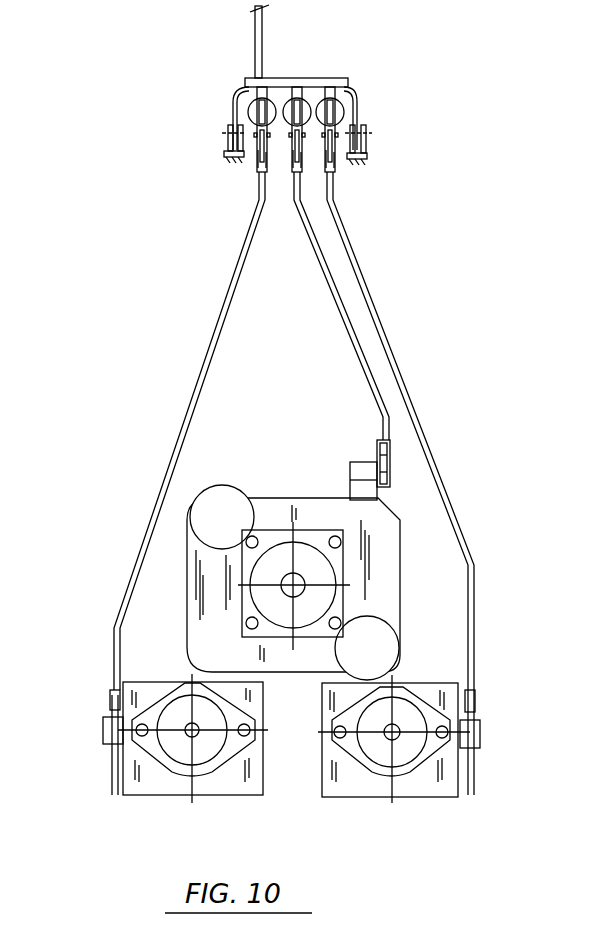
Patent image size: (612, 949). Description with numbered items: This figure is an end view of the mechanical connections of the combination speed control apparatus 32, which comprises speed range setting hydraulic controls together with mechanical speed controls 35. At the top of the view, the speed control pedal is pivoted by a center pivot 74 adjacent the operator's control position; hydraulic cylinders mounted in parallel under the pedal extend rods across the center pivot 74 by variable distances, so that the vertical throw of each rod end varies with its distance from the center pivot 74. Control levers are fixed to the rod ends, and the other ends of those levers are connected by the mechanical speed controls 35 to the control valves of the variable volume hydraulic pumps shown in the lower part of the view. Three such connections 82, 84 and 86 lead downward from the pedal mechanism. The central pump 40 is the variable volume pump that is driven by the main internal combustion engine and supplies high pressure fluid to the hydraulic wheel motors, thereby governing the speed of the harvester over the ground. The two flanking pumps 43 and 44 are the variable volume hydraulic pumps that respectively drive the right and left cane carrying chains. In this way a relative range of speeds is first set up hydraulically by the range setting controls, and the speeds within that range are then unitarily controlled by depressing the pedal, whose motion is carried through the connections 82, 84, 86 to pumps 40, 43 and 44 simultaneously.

The combination speed control apparatus 32 is at (322, 78).
The center pivot 74 is at (367, 137).
The mechanical speed controls 35 is at (225, 143).
The left cable 86 is at (218, 331).
The middle cable 82 is at (346, 338).
The right cable 84 is at (387, 331).
The variable volume pump 40 is at (334, 568).
The variable volume hydraulic pump 43 is at (176, 770).
The variable volume hydraulic pump 44 is at (408, 777).